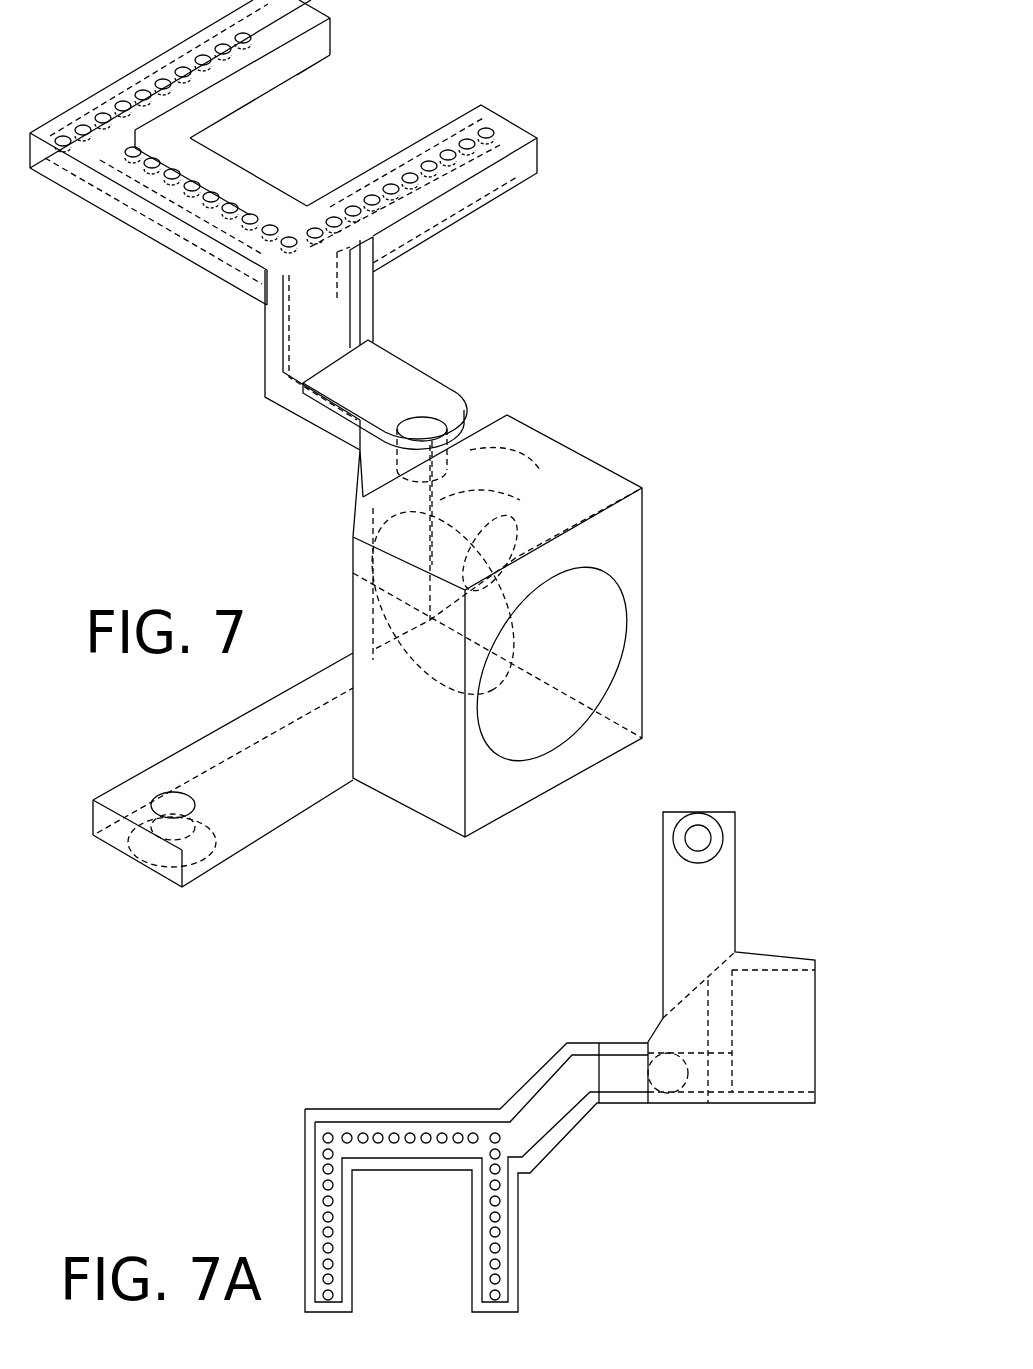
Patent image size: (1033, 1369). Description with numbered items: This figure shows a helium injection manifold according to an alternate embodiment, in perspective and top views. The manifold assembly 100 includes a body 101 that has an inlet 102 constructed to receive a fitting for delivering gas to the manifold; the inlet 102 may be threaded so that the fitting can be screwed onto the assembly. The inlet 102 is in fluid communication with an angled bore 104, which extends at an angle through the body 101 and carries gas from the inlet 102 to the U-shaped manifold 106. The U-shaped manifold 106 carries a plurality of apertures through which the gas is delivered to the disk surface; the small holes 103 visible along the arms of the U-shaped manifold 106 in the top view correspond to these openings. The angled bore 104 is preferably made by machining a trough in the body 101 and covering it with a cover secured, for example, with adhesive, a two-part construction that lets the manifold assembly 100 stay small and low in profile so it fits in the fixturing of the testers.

In FIG. 7, the manifold assembly 100 is at (598, 262).
In FIG. 7A, the manifold assembly 100 is at (242, 1122).
In FIG. 7, the body 101 is at (580, 478).
In FIG. 7A, the body 101 is at (760, 958).
In FIG. 7, the inlet 102 is at (577, 666).
In FIG. 7A, the inlet 102 is at (785, 1020).
In FIG. 7A, the holes 103 is at (498, 1277).
In FIG. 7, the angled bore 104 is at (537, 437).
In FIG. 7A, the angled bore 104 is at (675, 1080).
In FIG. 7, the U-shaped manifold 106 is at (148, 72).
In FIG. 7A, the U-shaped manifold 106 is at (306, 1186).